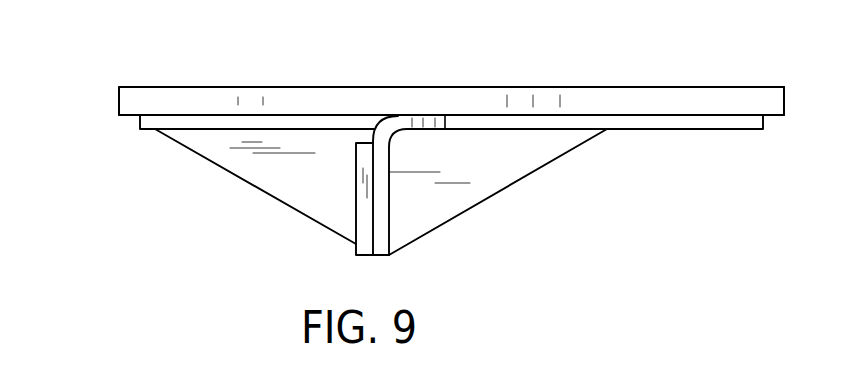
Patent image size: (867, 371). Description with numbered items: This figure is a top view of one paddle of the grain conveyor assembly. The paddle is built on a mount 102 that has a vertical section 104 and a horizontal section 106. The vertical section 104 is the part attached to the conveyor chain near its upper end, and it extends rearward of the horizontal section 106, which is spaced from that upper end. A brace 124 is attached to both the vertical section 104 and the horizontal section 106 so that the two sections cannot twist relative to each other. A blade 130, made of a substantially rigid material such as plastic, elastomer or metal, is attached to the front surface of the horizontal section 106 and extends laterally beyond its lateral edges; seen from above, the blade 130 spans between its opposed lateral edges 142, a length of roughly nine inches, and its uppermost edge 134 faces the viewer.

The mount 102 is at (252, 206).
The vertical section 104 is at (408, 128).
The horizontal section 106 is at (763, 129).
The brace 124 is at (481, 201).
The blade 130 is at (785, 87).
The uppermost edge 134 is at (612, 95).
The lateral edges 142 is at (118, 100).